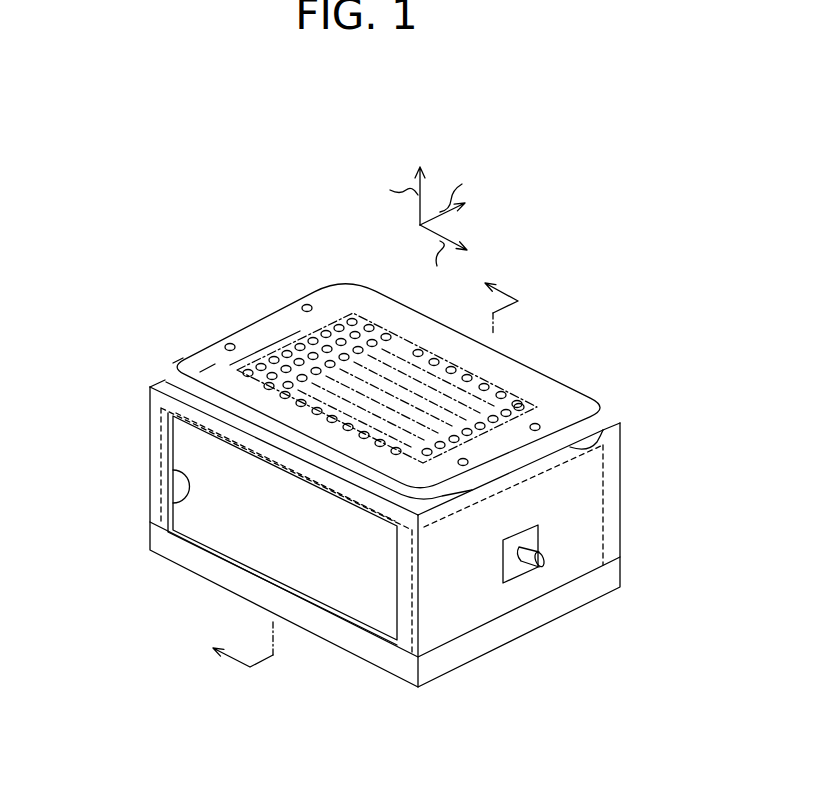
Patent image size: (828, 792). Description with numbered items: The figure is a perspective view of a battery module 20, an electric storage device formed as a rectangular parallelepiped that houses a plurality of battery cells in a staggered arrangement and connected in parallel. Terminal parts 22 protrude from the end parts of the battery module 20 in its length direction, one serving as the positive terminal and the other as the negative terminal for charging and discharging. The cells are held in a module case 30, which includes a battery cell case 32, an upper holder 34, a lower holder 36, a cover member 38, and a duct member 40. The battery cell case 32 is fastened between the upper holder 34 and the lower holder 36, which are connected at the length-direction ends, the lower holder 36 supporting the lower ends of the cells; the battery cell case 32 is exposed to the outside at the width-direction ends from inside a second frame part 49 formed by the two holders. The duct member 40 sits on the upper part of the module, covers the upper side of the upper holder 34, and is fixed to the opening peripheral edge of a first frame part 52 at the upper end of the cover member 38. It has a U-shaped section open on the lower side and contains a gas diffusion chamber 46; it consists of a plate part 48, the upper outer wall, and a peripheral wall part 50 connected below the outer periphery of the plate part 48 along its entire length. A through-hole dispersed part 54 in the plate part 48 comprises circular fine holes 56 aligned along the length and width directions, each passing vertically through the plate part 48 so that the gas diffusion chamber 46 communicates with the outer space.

The battery module 20 is at (543, 215).
The terminal part 22 is at (526, 569).
The module case 30 is at (578, 539).
The battery cell case 32 is at (262, 510).
The upper holder 34 is at (348, 496).
The lower holder 36 is at (374, 648).
The cover member 38 is at (584, 493).
The duct member 40 is at (546, 396).
The gas diffusion chamber 46 is at (203, 360).
The plate part 48 is at (335, 303).
The second frame part 49 is at (186, 502).
The peripheral wall part 50 is at (170, 368).
The first frame part 52 is at (617, 423).
The through-hole dispersed part 54 is at (550, 285).
The fine hole 56 is at (488, 382).